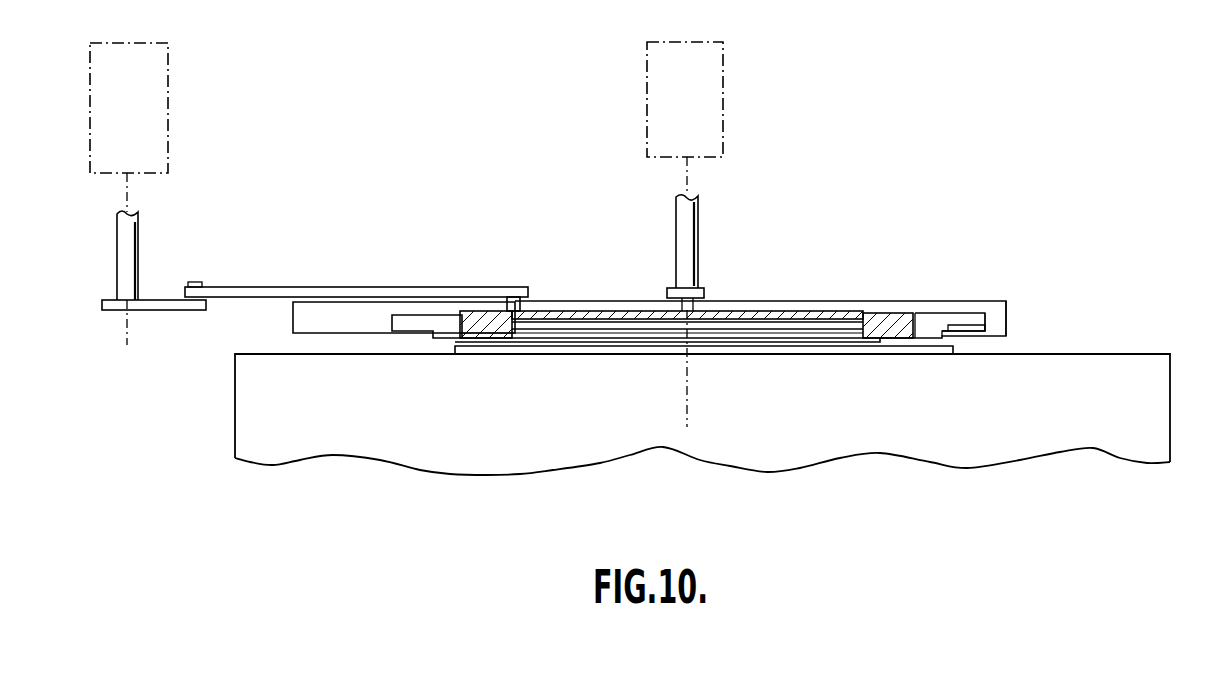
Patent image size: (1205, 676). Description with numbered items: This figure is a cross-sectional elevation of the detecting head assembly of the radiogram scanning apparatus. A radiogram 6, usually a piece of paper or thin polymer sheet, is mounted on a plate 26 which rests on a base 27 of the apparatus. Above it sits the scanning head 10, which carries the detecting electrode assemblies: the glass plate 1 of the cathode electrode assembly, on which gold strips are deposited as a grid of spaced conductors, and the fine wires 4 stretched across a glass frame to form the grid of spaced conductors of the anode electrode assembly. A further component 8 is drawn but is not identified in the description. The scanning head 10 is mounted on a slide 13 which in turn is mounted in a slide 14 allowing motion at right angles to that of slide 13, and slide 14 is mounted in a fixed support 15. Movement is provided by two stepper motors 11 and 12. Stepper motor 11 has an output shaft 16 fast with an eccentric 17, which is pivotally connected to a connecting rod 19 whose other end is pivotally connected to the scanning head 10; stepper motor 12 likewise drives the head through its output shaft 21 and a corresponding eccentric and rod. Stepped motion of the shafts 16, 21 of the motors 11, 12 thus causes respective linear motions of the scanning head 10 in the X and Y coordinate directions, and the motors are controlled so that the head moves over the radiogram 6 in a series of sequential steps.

The glass plate 1 is at (578, 309).
The fine wires 4 is at (633, 341).
The radiogram 6 is at (555, 341).
The support plate 8 is at (752, 341).
The scanning head 10 is at (820, 279).
The stepper motor 11 is at (157, 91).
The stepper motor 12 is at (710, 92).
The slide 13 is at (969, 320).
The slide 14 is at (991, 321).
The fixed support 15 is at (1009, 326).
The output shaft 16 is at (128, 241).
The eccentric 17 is at (152, 304).
The connecting rod 19 is at (368, 287).
The output shaft 21 is at (698, 238).
The plate 26 is at (913, 351).
The base 27 is at (1074, 415).